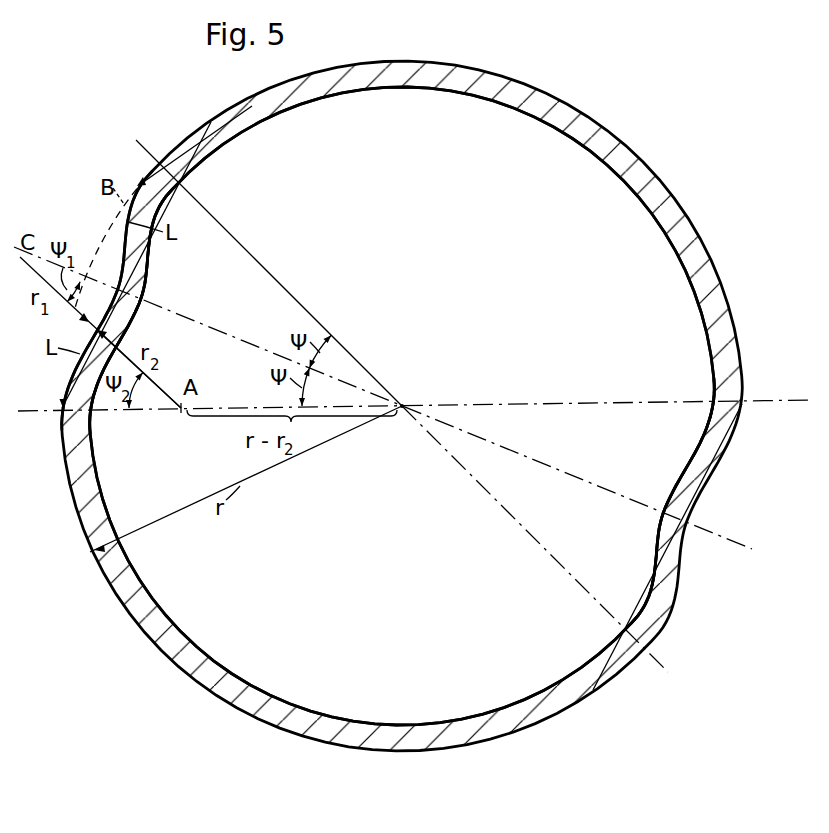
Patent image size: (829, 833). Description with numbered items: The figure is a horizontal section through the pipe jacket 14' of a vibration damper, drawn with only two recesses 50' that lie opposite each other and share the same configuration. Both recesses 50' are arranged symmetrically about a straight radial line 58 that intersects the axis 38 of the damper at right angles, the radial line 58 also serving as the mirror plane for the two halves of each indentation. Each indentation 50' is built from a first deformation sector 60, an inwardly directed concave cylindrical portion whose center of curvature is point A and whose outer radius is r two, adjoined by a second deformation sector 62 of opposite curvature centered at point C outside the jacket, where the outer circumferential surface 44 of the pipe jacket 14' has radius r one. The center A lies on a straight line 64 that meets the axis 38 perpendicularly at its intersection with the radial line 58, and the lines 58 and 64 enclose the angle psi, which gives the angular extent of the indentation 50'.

The outer circumferential surface 44 is at (228, 106).
The pipe jacket 14' is at (402, 397).
The recess (indentation) 50' is at (422, 405).
The radial line 58 is at (217, 331).
The first deformation sector 60 is at (66, 378).
The second deformation sector 62 is at (113, 307).
The straight line 64 is at (58, 412).
The axis 38 is at (404, 404).